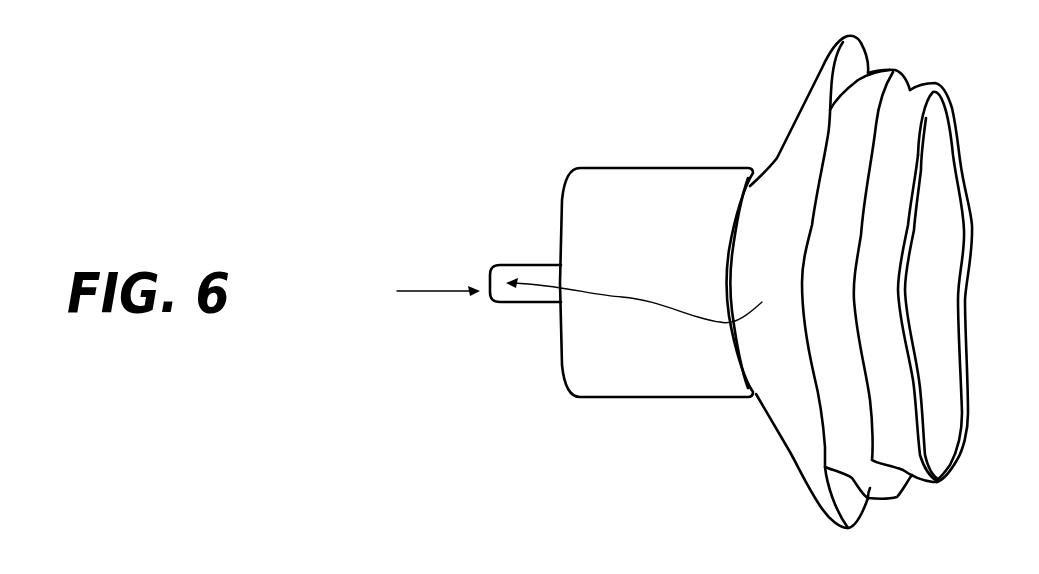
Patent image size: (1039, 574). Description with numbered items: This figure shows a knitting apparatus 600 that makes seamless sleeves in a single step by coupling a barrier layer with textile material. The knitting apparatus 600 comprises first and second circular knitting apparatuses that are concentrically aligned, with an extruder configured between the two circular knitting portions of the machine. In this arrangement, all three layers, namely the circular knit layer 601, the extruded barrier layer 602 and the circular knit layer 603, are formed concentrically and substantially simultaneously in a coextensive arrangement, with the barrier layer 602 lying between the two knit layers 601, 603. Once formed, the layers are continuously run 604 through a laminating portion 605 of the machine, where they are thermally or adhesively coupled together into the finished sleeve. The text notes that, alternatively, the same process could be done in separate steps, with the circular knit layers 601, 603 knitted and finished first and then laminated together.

The knitting apparatus 600 is at (636, 149).
The circular knit layer 601 is at (792, 150).
The extruded barrier layer 602 is at (877, 500).
The circular knit layer 603 is at (912, 103).
The continuous run 604 is at (588, 292).
The laminating portion 605 is at (537, 262).